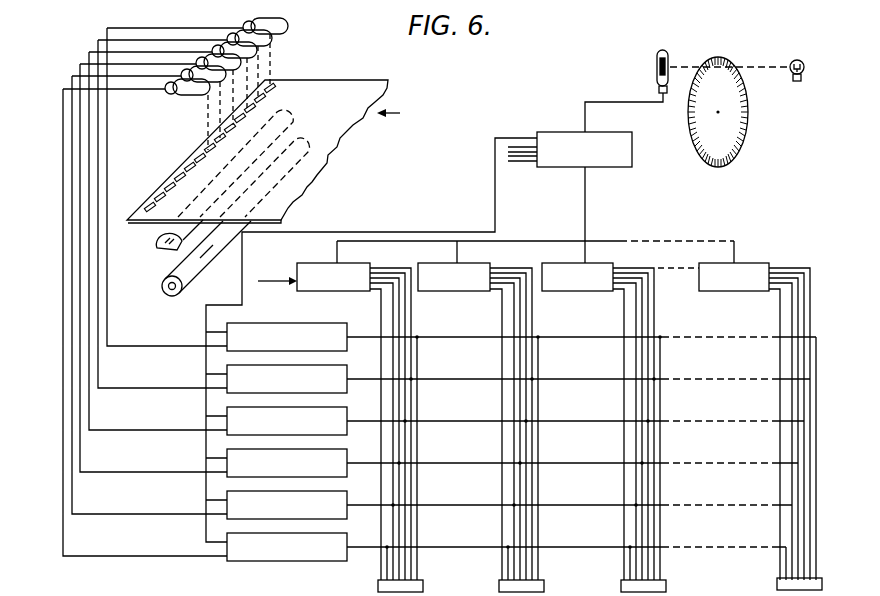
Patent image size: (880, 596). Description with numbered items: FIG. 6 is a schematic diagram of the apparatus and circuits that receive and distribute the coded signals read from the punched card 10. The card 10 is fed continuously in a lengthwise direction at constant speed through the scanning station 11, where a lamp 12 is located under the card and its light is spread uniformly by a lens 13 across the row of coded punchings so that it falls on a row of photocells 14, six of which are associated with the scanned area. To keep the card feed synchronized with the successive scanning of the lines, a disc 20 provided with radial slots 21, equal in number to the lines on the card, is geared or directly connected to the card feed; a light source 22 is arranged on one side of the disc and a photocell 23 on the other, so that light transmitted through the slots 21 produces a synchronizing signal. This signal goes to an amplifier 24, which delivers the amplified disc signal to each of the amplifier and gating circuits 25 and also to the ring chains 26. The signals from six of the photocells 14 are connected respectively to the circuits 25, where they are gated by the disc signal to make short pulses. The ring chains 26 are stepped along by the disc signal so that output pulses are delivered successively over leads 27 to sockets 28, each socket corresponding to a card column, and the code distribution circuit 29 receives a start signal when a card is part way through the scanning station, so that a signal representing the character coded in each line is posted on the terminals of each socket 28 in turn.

The punched card 10 is at (348, 88).
The scanning station 11 is at (148, 230).
The lamp 12 is at (210, 263).
The lens 13 is at (165, 248).
The photocells 14 is at (289, 28).
The disc 20 is at (736, 121).
The radial slots 21 is at (740, 157).
The light source 22 is at (808, 52).
The photocell 23 is at (657, 70).
The amplifier 24 is at (544, 131).
The amplifier and gating circuits 25 is at (331, 325).
The ring chains 26 is at (371, 264).
The leads 27 is at (382, 318).
The sockets 28 is at (419, 588).
The code distribution circuit 29 is at (625, 237).